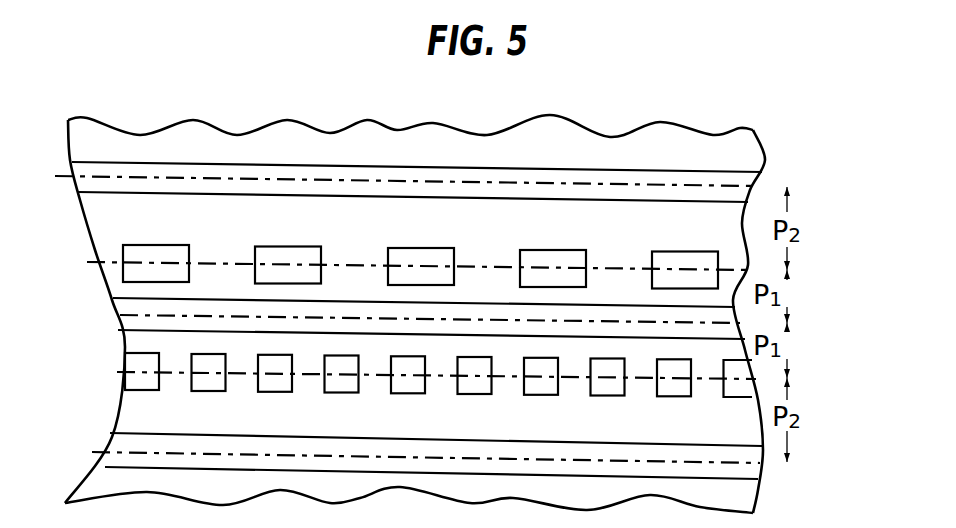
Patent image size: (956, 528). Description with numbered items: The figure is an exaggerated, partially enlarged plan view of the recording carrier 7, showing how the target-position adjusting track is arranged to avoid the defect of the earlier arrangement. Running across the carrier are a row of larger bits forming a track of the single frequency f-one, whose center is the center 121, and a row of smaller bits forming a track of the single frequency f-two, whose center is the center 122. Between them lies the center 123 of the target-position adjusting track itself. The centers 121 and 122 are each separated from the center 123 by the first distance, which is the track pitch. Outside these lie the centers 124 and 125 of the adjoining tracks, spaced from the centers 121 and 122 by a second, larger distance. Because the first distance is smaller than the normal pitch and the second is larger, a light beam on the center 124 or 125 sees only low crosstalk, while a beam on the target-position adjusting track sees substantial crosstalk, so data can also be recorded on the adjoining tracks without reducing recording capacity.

The recording carrier 7 is at (734, 128).
The center of the track composed of the bit of single-frequency f1 121 is at (763, 270).
The center of the track composed of the bit of single-frequency f2 122 is at (730, 378).
The center of the target-position adjusting track 123 is at (727, 323).
The center of the track adjoining the f1 single-frequency track 124 is at (767, 187).
The center of the track adjoining the f2 single-frequency track 125 is at (767, 462).